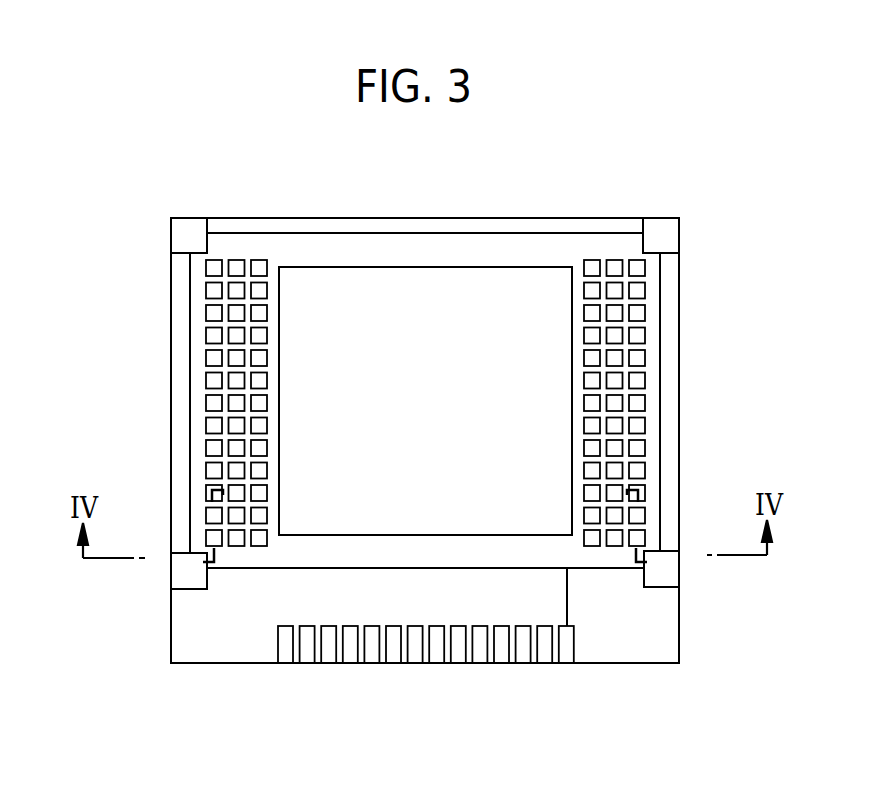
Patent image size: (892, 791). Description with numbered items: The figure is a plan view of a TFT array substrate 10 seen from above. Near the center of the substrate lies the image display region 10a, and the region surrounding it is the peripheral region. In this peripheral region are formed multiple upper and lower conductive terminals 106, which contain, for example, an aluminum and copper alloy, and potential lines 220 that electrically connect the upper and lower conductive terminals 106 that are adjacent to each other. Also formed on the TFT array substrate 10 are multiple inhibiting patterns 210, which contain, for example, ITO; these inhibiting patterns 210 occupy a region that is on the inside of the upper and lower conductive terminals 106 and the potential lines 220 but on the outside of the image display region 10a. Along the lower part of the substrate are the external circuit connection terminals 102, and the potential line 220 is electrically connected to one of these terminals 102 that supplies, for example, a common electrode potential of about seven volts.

The TFT array substrate 10 is at (575, 217).
The image display region 10a is at (300, 453).
The external circuit connection terminals 102 is at (567, 648).
The upper and lower conductive terminals 106 is at (181, 238).
The inhibiting patterns 210 is at (215, 403).
The potential lines 220 is at (369, 233).